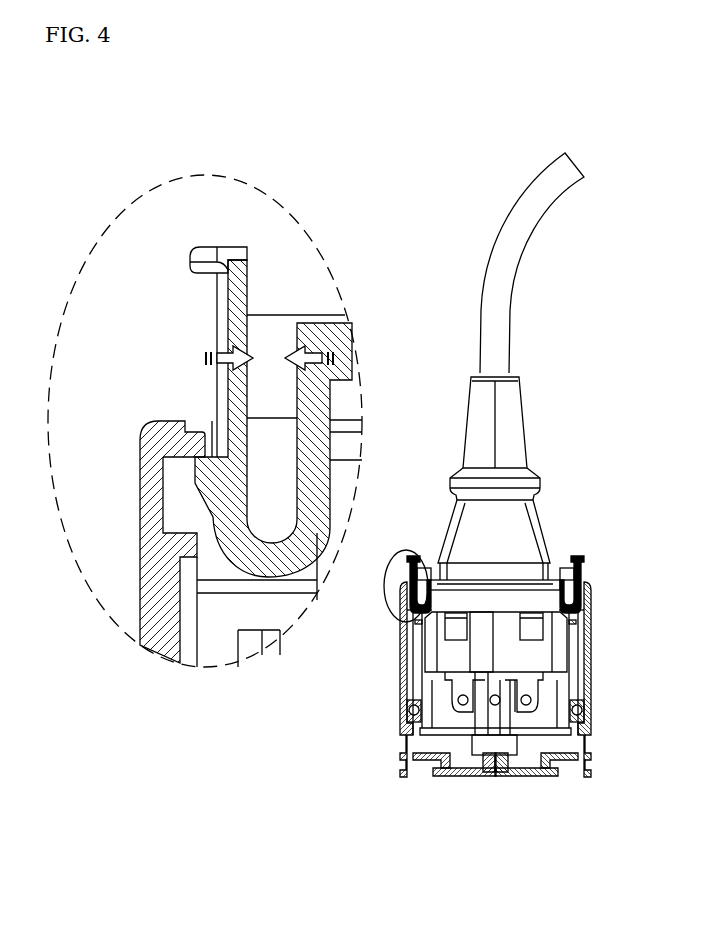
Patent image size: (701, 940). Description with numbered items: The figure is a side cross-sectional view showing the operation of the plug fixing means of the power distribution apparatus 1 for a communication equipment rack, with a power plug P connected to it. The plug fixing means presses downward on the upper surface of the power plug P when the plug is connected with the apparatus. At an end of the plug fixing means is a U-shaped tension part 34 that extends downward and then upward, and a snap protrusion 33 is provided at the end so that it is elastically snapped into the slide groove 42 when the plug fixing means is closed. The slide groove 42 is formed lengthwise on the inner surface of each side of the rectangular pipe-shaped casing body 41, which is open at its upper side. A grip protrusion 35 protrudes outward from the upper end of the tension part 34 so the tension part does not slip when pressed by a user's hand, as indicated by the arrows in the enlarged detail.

The power distribution apparatus 1 is at (509, 465).
The power plug P is at (537, 537).
The snap protrusion 33 is at (165, 421).
The tension part 34 is at (237, 327).
The grip protrusion 35 is at (196, 250).
The casing body 41 is at (147, 540).
The slide groove 42 is at (176, 497).